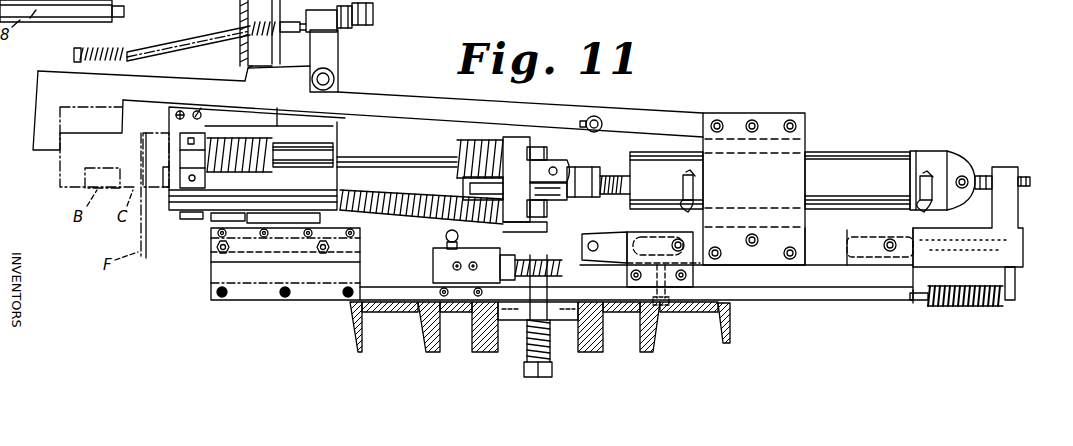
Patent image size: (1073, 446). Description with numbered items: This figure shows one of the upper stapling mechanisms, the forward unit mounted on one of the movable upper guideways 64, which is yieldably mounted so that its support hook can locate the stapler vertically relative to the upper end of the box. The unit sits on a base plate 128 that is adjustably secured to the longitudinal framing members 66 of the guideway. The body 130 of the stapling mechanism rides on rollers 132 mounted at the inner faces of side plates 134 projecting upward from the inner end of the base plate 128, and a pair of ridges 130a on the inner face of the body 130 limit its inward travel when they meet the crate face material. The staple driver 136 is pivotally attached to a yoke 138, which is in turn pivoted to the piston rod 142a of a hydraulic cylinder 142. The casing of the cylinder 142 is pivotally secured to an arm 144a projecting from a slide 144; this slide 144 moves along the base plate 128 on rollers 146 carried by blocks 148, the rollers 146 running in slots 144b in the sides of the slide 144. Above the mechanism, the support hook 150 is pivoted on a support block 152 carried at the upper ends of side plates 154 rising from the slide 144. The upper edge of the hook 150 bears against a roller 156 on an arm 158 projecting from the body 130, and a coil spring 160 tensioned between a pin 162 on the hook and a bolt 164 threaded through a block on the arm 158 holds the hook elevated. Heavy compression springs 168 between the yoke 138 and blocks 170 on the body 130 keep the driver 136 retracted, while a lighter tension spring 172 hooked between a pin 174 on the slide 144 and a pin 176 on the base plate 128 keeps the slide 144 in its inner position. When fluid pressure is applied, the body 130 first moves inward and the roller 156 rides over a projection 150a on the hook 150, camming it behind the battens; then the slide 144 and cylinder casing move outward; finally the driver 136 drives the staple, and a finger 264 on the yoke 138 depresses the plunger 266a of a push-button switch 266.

The movable upper guideway 64 is at (347, 329).
The longitudinal framing member 66 is at (350, 322).
The base plate 128 is at (362, 283).
The body 130 is at (213, 198).
The ridges 130a is at (167, 170).
The rollers 132 is at (213, 252).
The side plates 134 is at (118, 12).
The staple driver 136 is at (337, 180).
The yoke 138 is at (517, 145).
The hydraulic cylinder 142 is at (838, 165).
The piston rod 142a is at (623, 170).
The slide 144 is at (1023, 248).
The arm 144a is at (1013, 198).
The slots 144b is at (633, 233).
The rollers 146 is at (677, 238).
The blocks 148 is at (627, 270).
The support hook 150 is at (43, 89).
The projection 150a is at (245, 82).
The support block 152 is at (638, 108).
The side plates 154 is at (800, 144).
The roller 156 is at (335, 79).
The arm 158 is at (333, 50).
The coil spring 160 is at (127, 50).
The pin 162 is at (74, 58).
The bolt 164 is at (350, 20).
The compression springs 168 is at (465, 140).
The blocks 170 is at (185, 140).
The tension spring 172 is at (963, 304).
The pin 174 is at (1016, 286).
The pin 176 is at (910, 303).
The finger 264 is at (522, 226).
The push-button switch 266 is at (502, 268).
The plunger 266a is at (458, 236).